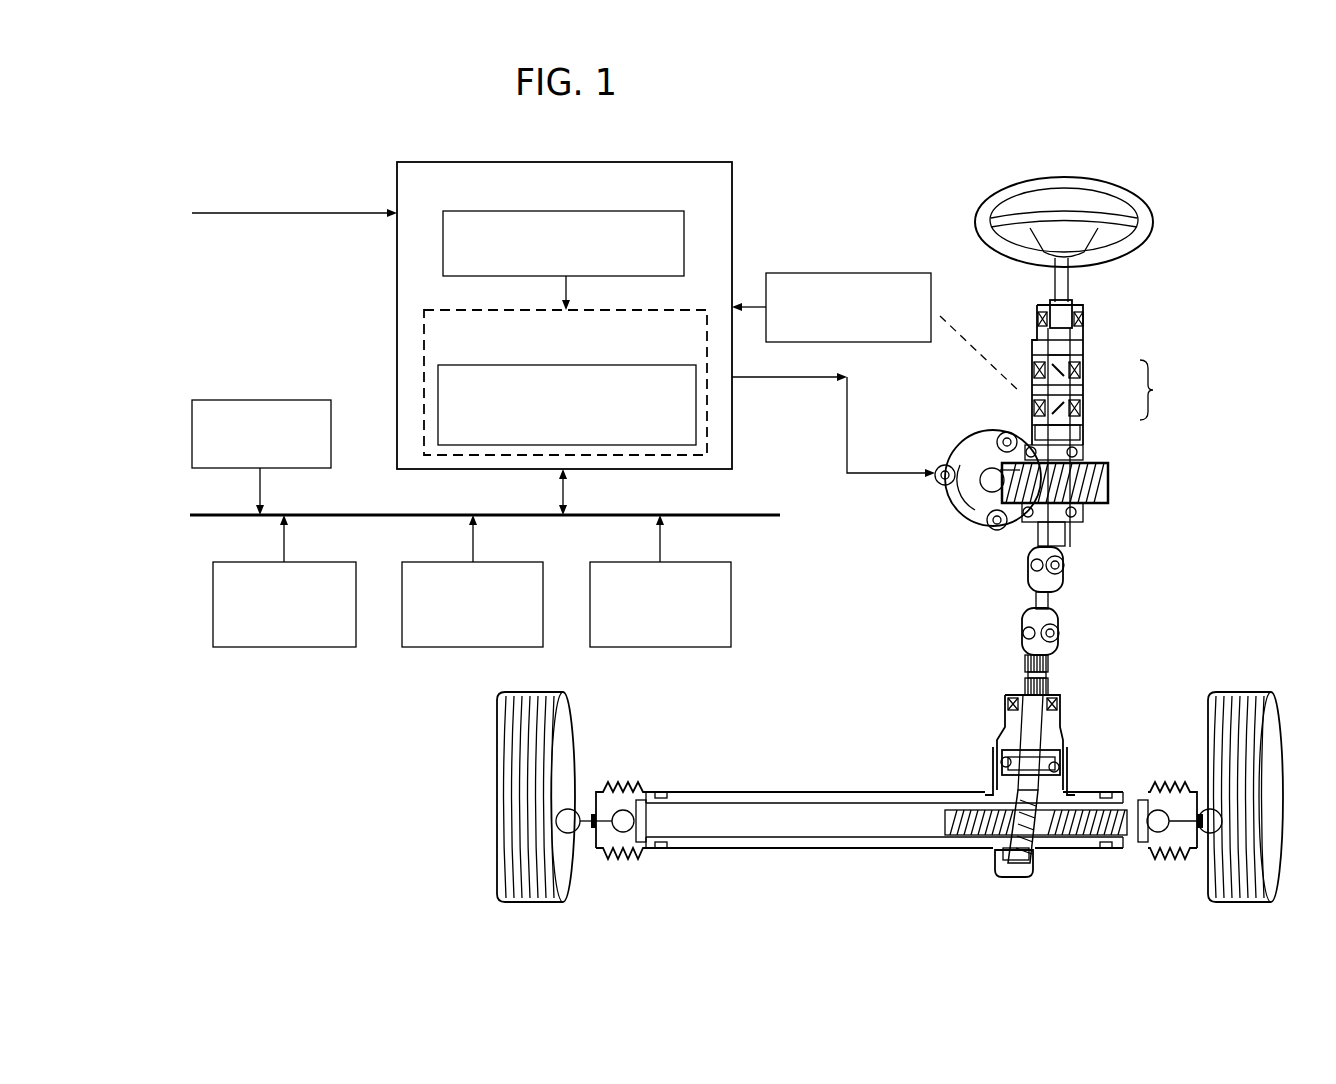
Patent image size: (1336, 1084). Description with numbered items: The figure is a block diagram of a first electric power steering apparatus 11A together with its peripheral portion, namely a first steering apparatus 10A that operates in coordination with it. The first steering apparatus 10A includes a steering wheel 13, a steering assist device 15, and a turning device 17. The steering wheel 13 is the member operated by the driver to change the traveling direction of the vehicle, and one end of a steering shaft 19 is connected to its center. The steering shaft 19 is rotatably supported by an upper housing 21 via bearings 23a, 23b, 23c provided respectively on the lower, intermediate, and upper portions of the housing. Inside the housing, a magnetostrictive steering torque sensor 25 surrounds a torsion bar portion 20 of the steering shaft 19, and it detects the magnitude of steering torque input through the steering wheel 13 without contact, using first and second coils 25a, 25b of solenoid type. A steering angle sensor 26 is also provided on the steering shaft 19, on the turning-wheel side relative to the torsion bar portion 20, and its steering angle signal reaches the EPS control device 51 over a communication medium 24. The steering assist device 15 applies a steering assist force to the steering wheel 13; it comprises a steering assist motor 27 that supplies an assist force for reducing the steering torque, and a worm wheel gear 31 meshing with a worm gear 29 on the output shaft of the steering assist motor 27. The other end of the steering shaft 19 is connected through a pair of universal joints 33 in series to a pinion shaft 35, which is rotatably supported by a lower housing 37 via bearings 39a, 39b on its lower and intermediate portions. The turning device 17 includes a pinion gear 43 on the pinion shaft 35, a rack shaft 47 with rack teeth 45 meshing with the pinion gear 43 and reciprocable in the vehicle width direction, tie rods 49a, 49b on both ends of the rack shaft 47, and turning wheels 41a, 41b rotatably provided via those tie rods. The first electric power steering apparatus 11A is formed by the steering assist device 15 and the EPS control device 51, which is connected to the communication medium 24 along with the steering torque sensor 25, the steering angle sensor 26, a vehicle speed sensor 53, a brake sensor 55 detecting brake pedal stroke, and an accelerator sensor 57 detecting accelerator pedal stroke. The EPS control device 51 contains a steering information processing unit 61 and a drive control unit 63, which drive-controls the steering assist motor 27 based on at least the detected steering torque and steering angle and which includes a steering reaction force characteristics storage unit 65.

The first steering apparatus 10A is at (1100, 211).
The first electric power steering apparatus 11A is at (600, 300).
The steering wheel 13 is at (1145, 215).
The steering assist device 15 is at (1077, 493).
The turning device 17 is at (895, 855).
The steering shaft 19 is at (1068, 278).
The torsion bar portion 20 is at (1048, 392).
The upper housing 21 is at (1080, 312).
The bearing 23a is at (1085, 515).
The bearing 23b is at (1083, 452).
The bearing 23c is at (1084, 322).
The communication medium 24 is at (728, 515).
The steering torque sensor 25 is at (885, 273).
The first coil 25a is at (1083, 372).
The second coil 25b is at (1083, 410).
The steering angle sensor 26 is at (700, 562).
The steering assist motor 27 is at (975, 447).
The worm gear 29 is at (978, 498).
The worm wheel gear 31 is at (1108, 483).
The universal joints 33 is at (1063, 568).
The pinion shaft 35 is at (1032, 722).
The lower housing 37 is at (1062, 710).
The bearing 39a is at (1033, 865).
The bearing 39b is at (1063, 770).
The turning wheel 41a is at (1240, 700).
The turning wheel 41b is at (560, 705).
The pinion gear 43 is at (1000, 845).
The rack teeth 45 is at (960, 820).
The rack shaft 47 is at (808, 820).
The tie rod 49a is at (1178, 832).
The tie rod 49b is at (605, 858).
The EPS control device 51 is at (564, 315).
The vehicle speed sensor 53 is at (508, 562).
The brake sensor 55 is at (308, 562).
The accelerator sensor 57 is at (288, 400).
The steering information processing unit 61 is at (684, 255).
The drive control unit 63 is at (712, 381).
The steering reaction force characteristics storage unit 65 is at (630, 365).